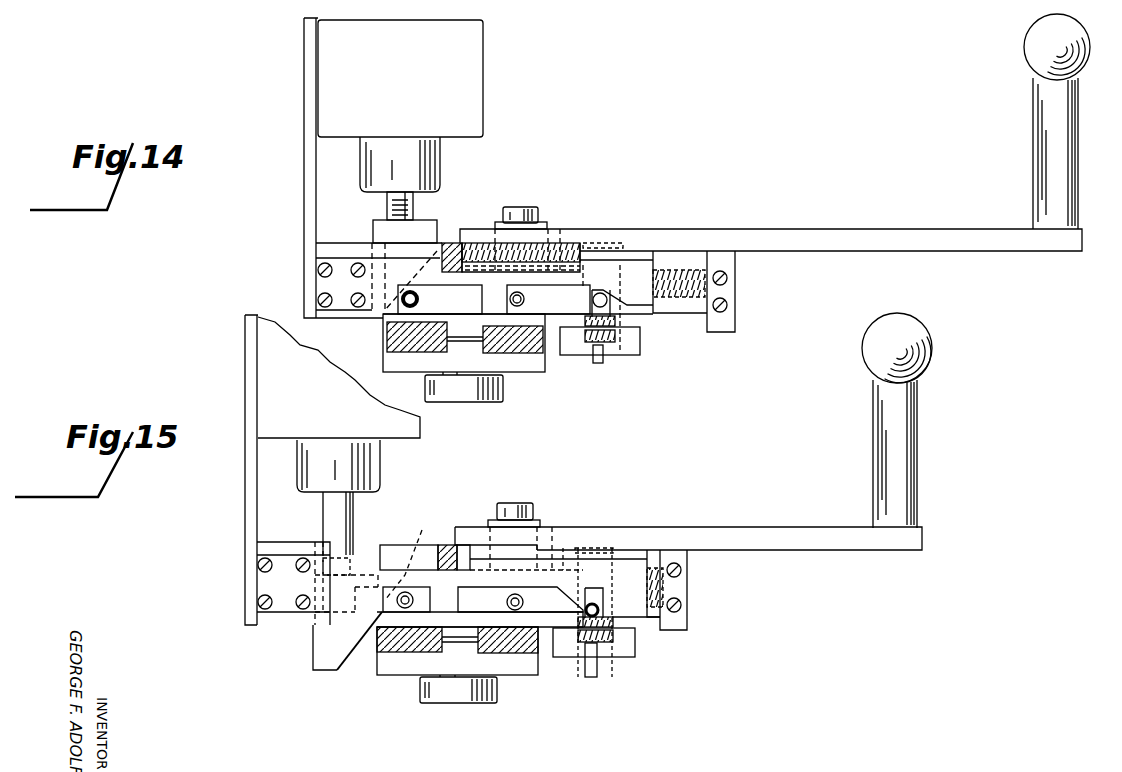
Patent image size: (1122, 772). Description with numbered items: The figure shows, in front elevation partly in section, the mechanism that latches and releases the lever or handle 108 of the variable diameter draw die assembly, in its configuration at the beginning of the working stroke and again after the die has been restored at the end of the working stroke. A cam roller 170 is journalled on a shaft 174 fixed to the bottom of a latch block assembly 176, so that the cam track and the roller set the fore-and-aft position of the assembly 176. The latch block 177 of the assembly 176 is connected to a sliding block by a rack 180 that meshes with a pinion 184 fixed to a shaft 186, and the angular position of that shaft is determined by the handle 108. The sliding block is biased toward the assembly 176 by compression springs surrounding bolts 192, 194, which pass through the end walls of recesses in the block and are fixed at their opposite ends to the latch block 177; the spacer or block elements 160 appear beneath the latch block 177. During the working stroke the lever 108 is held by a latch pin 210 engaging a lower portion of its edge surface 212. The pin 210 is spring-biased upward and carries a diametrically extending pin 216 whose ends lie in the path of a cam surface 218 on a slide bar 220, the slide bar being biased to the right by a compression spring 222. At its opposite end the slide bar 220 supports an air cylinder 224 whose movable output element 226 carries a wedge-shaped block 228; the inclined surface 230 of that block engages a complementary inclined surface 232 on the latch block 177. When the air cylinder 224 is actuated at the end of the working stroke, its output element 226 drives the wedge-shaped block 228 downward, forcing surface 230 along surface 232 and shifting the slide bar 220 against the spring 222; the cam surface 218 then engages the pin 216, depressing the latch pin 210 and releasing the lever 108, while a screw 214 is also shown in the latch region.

In FIG. 14, the handle 108 is at (917, 232).
In FIG. 15, the handle 108 is at (873, 418).
In FIG. 14, the spacer block 160 is at (386, 335).
In FIG. 15, the spacer block 160 is at (398, 655).
In FIG. 14, the cam roller 170 is at (480, 402).
In FIG. 15, the cam roller 170 is at (480, 702).
In FIG. 14, the shaft 174 is at (455, 375).
In FIG. 15, the shaft 174 is at (460, 677).
In FIG. 14, the latch block assembly 176 is at (462, 357).
In FIG. 15, the latch block assembly 176 is at (438, 674).
In FIG. 14, the latch block 177 is at (545, 366).
In FIG. 15, the latch block 177 is at (414, 667).
In FIG. 14, the rack 180 is at (452, 243).
In FIG. 15, the rack 180 is at (447, 545).
In FIG. 14, the pinion 184 is at (556, 235).
In FIG. 15, the pinion 184 is at (547, 550).
In FIG. 14, the shaft 186 is at (517, 207).
In FIG. 15, the shaft 186 is at (506, 503).
In FIG. 14, the bolt 192 is at (418, 299).
In FIG. 15, the bolt 192 is at (418, 602).
In FIG. 14, the bolt 194 is at (525, 299).
In FIG. 15, the bolt 194 is at (523, 602).
In FIG. 14, the latch pin 210 is at (619, 258).
In FIG. 15, the latch pin 210 is at (620, 548).
In FIG. 14, the edge surface 212 is at (660, 230).
In FIG. 15, the edge surface 212 is at (598, 530).
In FIG. 14, the screw 214 is at (612, 345).
In FIG. 15, the screw 214 is at (578, 660).
In FIG. 14, the pin 216 is at (602, 289).
In FIG. 15, the pin 216 is at (612, 617).
In FIG. 14, the cam surface 218 is at (607, 298).
In FIG. 14, the slide bar 220 is at (735, 292).
In FIG. 15, the slide bar 220 is at (688, 598).
In FIG. 14, the compression spring 222 is at (690, 300).
In FIG. 15, the compression spring 222 is at (690, 569).
In FIG. 14, the air cylinder 224 is at (483, 74).
In FIG. 15, the air cylinder 224 is at (258, 375).
In FIG. 14, the movable output element 226 is at (395, 203).
In FIG. 15, the movable output element 226 is at (323, 505).
In FIG. 14, the wedge-shaped block 228 is at (373, 230).
In FIG. 15, the wedge-shaped block 228 is at (313, 642).
In FIG. 15, the inclined surface 230 is at (352, 660).
In FIG. 15, the inclined surface 232 is at (426, 526).